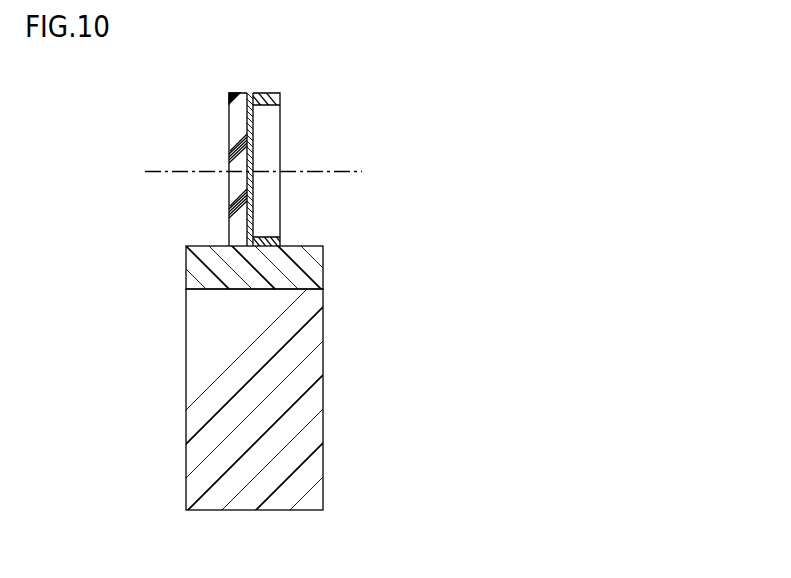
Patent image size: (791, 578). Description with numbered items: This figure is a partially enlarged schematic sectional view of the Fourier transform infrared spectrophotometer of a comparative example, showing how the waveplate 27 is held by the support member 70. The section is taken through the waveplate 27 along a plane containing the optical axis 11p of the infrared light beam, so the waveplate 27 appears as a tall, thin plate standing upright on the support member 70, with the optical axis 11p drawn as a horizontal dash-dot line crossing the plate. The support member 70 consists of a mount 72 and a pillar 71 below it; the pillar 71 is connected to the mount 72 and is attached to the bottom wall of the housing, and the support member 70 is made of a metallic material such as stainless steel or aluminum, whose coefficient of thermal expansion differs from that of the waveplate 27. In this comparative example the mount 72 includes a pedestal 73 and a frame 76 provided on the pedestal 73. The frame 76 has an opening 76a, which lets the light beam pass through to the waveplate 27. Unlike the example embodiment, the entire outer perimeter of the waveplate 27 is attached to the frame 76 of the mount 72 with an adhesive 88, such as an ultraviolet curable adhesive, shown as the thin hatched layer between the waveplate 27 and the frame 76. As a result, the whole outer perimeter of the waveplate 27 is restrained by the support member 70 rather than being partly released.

The optical axis 11p is at (352, 171).
The waveplate 27 is at (229, 100).
The adhesive 88 is at (250, 93).
The support member 70 is at (299, 334).
The pillar 71 is at (323, 347).
The mount 72 is at (279, 215).
The pedestal 73 is at (323, 266).
The frame 76 is at (314, 173).
The opening 76a is at (257, 96).